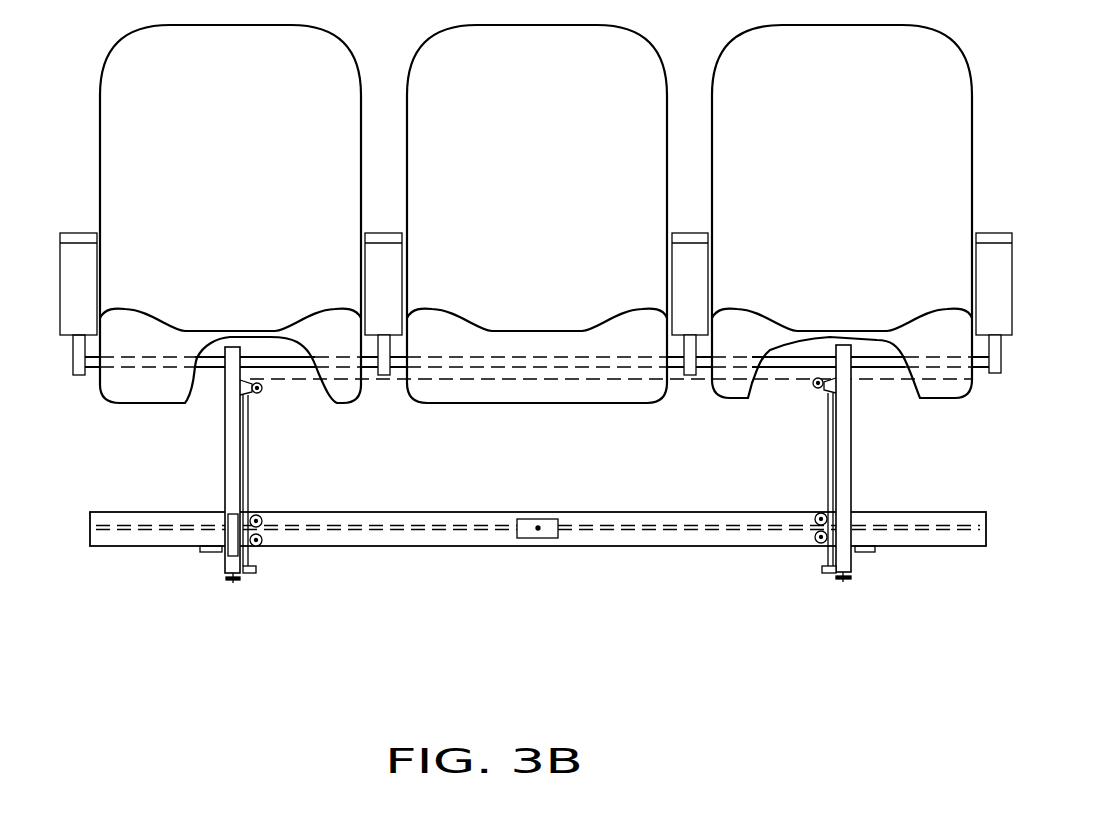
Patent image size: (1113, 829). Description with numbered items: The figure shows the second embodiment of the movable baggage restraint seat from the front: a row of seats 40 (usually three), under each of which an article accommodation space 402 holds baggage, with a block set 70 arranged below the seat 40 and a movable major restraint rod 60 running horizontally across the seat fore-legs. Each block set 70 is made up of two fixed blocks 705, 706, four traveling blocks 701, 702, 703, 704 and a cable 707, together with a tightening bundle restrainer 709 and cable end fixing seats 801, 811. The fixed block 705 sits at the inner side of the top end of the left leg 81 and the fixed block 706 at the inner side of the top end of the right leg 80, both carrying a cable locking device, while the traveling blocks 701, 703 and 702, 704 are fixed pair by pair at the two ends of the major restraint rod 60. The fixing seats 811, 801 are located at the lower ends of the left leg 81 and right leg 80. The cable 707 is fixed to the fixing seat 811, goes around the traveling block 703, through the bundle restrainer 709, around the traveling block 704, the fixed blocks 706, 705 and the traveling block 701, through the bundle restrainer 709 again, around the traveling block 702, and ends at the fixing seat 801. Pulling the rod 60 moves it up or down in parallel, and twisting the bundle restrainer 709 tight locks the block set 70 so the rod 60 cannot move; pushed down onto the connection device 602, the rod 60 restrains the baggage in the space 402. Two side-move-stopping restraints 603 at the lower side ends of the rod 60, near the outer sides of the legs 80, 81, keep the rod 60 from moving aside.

The seat 40 is at (112, 184).
The movable major restraint rod 60 is at (950, 548).
The connection device of the restraint rod 602 is at (232, 528).
The side-move-stopping restraint 603 is at (208, 553).
The block set 70 is at (395, 506).
The traveling block 701 is at (262, 515).
The traveling block 702 is at (812, 544).
The traveling block 703 is at (262, 545).
The traveling block 704 is at (815, 513).
The fixed block 705 is at (262, 392).
The fixed block 706 is at (816, 390).
The cable 707 is at (250, 463).
The tightening bundle restrainer 709 is at (540, 540).
The article accommodation space 402 is at (603, 473).
The right leg 80 is at (848, 438).
The cable end fixing seat 801 is at (822, 569).
The left leg 81 is at (225, 455).
The cable end fixing seat 811 is at (256, 573).